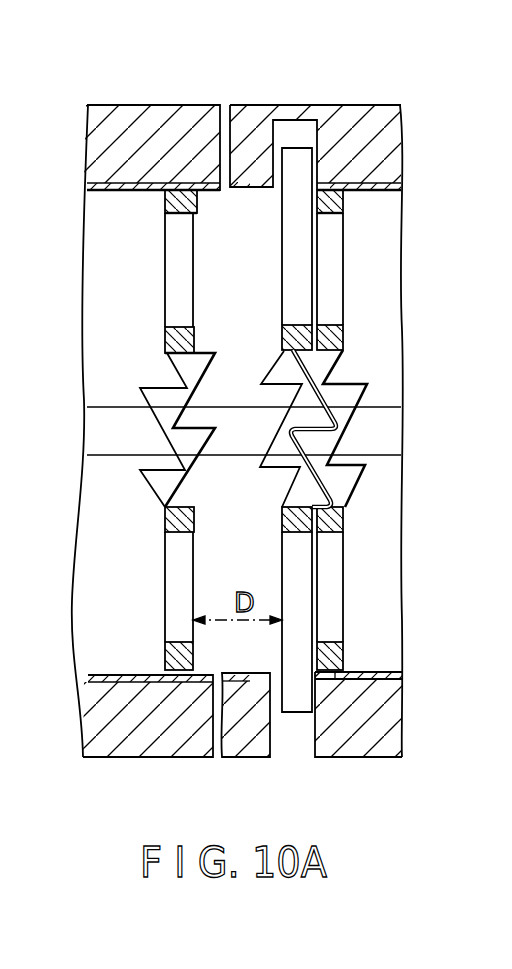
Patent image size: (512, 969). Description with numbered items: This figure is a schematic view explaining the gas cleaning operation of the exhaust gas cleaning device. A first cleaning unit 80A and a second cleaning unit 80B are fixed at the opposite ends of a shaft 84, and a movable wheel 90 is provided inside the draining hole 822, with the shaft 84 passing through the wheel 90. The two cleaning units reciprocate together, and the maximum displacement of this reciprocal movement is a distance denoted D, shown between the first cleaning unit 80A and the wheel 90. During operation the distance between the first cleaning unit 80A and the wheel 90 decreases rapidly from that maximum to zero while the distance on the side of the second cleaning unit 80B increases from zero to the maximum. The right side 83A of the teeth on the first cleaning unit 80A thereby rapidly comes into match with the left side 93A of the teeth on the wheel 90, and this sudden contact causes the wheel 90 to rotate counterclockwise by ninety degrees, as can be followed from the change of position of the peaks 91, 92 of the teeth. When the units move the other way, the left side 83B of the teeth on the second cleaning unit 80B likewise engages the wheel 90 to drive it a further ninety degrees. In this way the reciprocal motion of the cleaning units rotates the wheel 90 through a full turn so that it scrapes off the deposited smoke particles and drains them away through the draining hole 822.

The first cleaning unit 80A is at (176, 190).
The second cleaning unit 80B is at (337, 190).
The right side of the teeth on the first cleaning unit 83A is at (163, 507).
The left side of the teeth on the second cleaning unit 83B is at (327, 400).
The shaft 84 is at (103, 445).
The wheel 90 is at (292, 150).
The peak of the teeth 91 is at (270, 467).
The peak of the teeth 92 is at (265, 379).
The left side of the teeth on the wheel 93A is at (278, 427).
The draining hole 822 is at (277, 690).